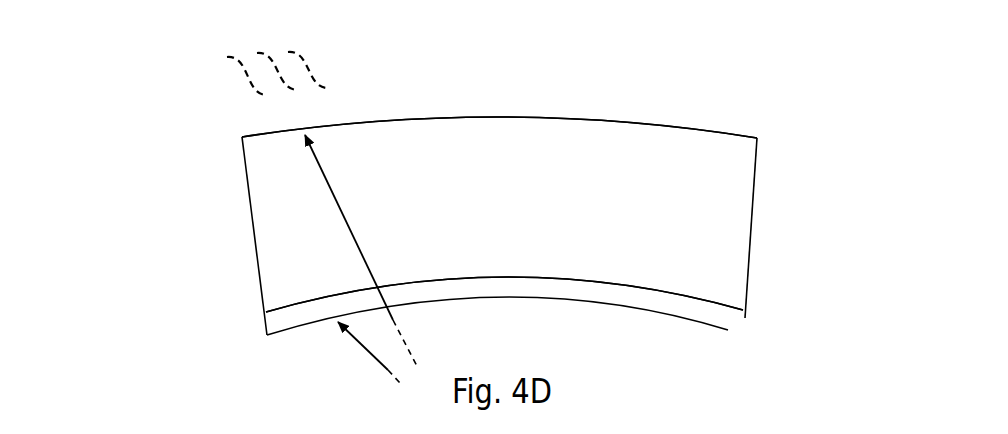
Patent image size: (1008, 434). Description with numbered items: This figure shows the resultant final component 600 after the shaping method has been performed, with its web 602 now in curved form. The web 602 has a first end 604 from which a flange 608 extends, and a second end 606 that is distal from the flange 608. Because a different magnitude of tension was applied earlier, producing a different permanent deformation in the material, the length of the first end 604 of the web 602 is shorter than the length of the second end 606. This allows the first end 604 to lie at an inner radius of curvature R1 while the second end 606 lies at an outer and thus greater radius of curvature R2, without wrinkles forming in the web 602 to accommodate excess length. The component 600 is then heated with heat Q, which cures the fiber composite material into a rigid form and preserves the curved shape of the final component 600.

The final component 600 is at (230, 178).
The web 602 is at (473, 178).
The first end 604 is at (712, 300).
The second end 606 is at (643, 127).
The flange 608 is at (730, 329).
The heat Q is at (293, 70).
The inner radius of curvature R1 is at (352, 352).
The outer radius of curvature R2 is at (361, 251).